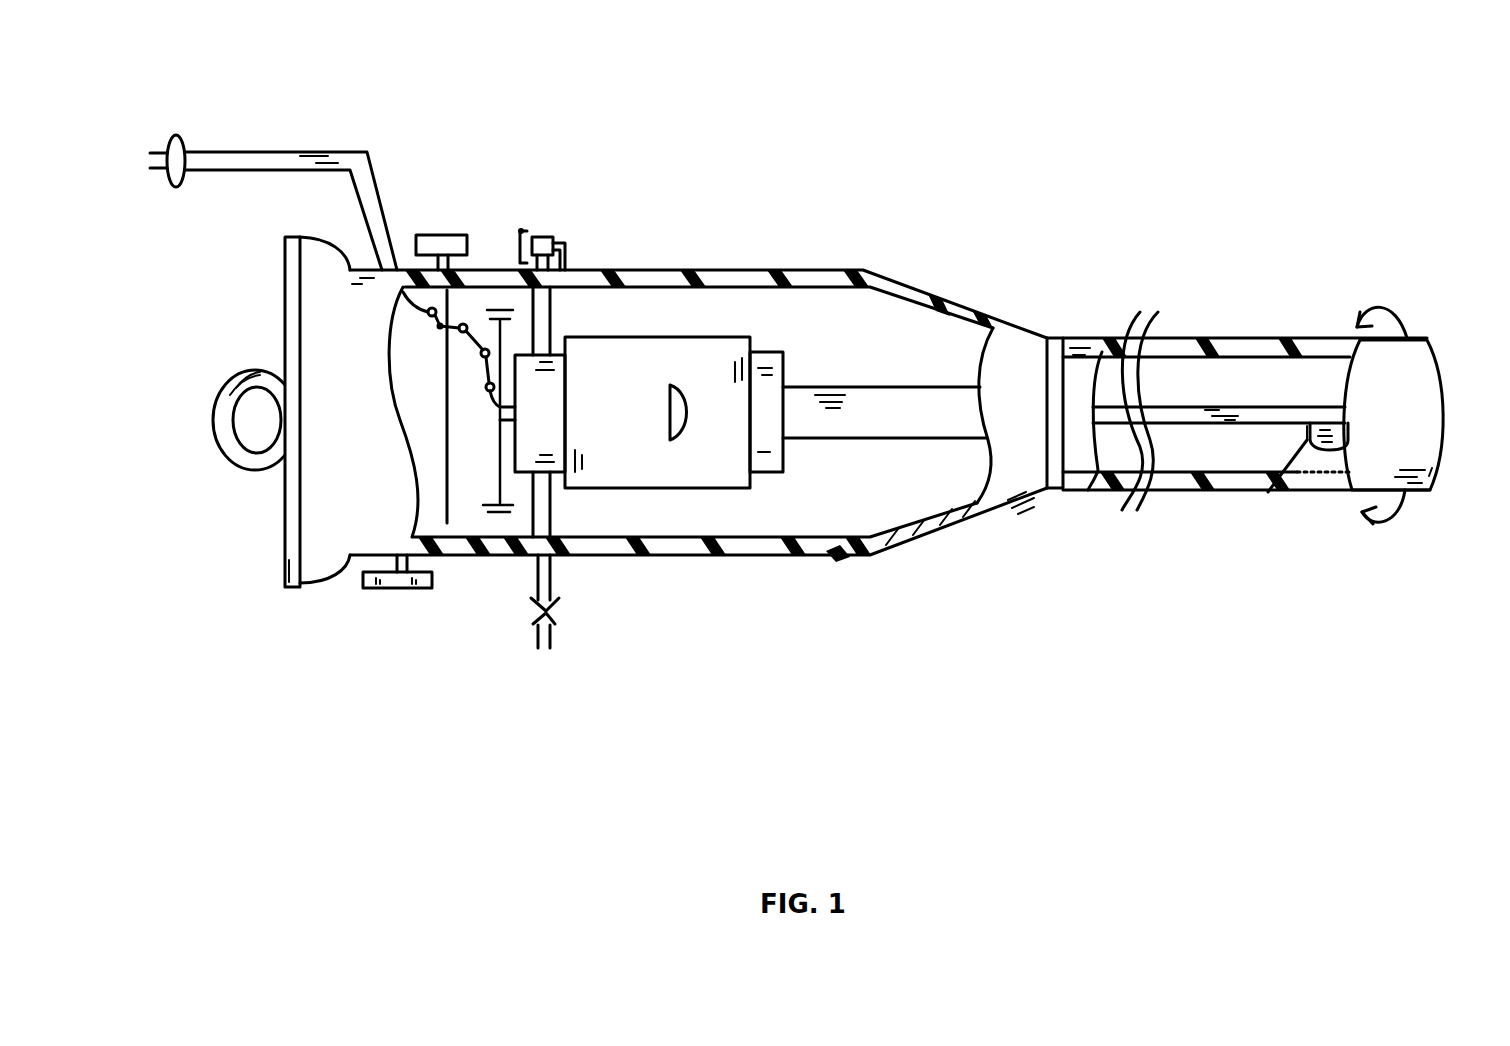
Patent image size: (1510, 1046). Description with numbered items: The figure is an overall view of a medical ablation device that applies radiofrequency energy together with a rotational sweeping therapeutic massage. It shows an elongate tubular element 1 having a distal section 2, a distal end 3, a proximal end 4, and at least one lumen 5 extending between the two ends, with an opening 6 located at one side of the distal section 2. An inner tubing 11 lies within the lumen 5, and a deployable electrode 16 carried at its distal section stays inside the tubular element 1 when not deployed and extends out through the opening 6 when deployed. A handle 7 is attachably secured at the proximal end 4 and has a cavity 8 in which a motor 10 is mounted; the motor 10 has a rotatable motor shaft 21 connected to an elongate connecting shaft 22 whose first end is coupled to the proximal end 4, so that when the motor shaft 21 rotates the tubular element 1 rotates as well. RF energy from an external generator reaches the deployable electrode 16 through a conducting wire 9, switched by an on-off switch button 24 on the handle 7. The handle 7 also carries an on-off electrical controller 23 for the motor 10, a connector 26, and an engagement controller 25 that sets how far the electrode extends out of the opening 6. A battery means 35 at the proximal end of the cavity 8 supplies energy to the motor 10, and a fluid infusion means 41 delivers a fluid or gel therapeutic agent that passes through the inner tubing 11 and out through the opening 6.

The elongate tubular element 1 is at (1213, 333).
The distal section 2 is at (1270, 570).
The distal end 3 is at (1432, 333).
The proximal end 4 is at (1063, 330).
The lumen 5 is at (1265, 382).
The opening 6 is at (1312, 483).
The handle 7 is at (717, 267).
The cavity 8 is at (860, 325).
The conducting wire 9 is at (453, 328).
The motor 10 is at (627, 332).
The inner tubing 11 is at (1183, 415).
The deployable electrode 16 is at (1268, 493).
The motor shaft 21 is at (773, 350).
The elongate connecting shaft 22 is at (922, 383).
The on-off electrical controller 23 is at (363, 593).
The on-off switch button 24 is at (448, 233).
The engagement controller 25 is at (568, 232).
The connector 26 is at (187, 137).
The battery means 35 is at (325, 477).
The fluid infusion means 41 is at (533, 588).